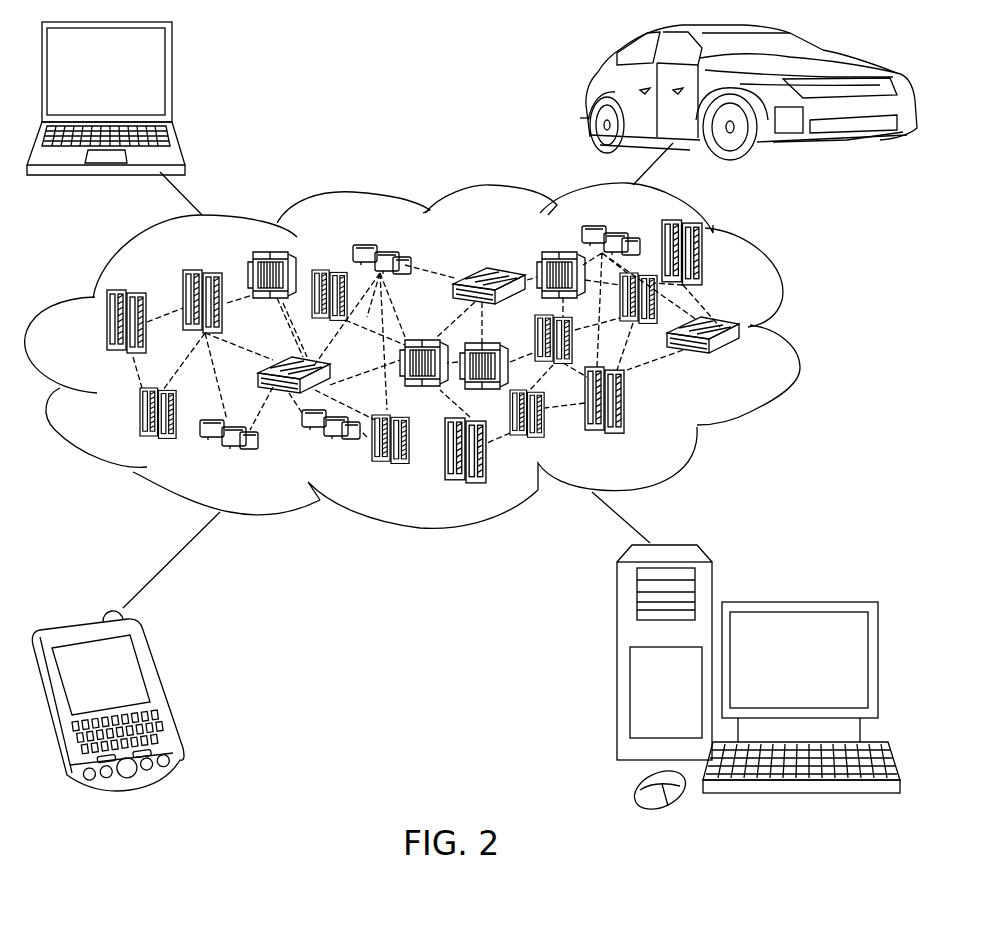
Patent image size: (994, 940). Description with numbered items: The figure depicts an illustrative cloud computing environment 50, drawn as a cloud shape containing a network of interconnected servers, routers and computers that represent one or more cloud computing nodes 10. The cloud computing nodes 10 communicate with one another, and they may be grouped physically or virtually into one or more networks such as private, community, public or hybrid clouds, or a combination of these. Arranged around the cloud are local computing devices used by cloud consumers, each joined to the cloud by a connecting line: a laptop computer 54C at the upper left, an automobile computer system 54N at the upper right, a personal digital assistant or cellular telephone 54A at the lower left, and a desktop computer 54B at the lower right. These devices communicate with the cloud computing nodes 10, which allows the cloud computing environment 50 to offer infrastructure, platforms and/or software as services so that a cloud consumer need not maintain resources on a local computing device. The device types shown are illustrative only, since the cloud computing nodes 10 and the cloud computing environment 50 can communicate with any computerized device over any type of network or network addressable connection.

The laptop computer 54C is at (172, 79).
The automobile computer system 54N is at (593, 93).
The personal digital assistant or cellular telephone 54A is at (158, 685).
The desktop computer 54B is at (798, 601).
The cloud computing environment 50 is at (798, 332).
The cloud computing nodes 10 is at (741, 361).